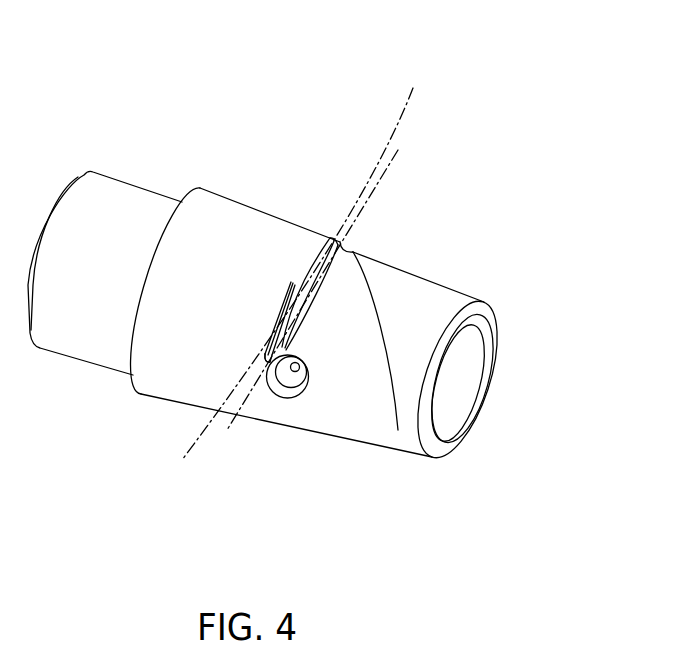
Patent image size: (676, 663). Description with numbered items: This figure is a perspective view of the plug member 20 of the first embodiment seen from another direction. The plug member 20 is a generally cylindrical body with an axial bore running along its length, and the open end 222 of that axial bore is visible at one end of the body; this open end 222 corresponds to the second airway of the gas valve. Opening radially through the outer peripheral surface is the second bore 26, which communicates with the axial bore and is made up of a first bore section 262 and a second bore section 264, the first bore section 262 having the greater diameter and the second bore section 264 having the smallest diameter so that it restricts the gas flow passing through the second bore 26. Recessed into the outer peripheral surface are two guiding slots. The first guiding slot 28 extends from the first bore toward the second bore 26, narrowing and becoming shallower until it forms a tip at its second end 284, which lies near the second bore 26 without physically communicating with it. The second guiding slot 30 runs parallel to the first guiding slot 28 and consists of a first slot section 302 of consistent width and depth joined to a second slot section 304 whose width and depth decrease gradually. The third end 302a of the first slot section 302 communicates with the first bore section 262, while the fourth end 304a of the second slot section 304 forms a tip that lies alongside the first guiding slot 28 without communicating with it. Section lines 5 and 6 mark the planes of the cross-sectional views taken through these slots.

The plug member 20 is at (520, 143).
The open end 222 is at (475, 375).
The second bore 26 is at (302, 479).
The first bore section 262 is at (280, 390).
The second bore section 264 is at (296, 370).
The first guiding slot 28 is at (398, 430).
The second end 284 is at (287, 350).
The second guiding slot 30 is at (189, 252).
The first slot section 302 is at (264, 362).
The third end 302a is at (262, 366).
The second slot section 304 is at (284, 303).
The fourth end 304a is at (287, 296).
The section line 5- 5 is at (398, 150).
The section line 6- 6 is at (413, 88).